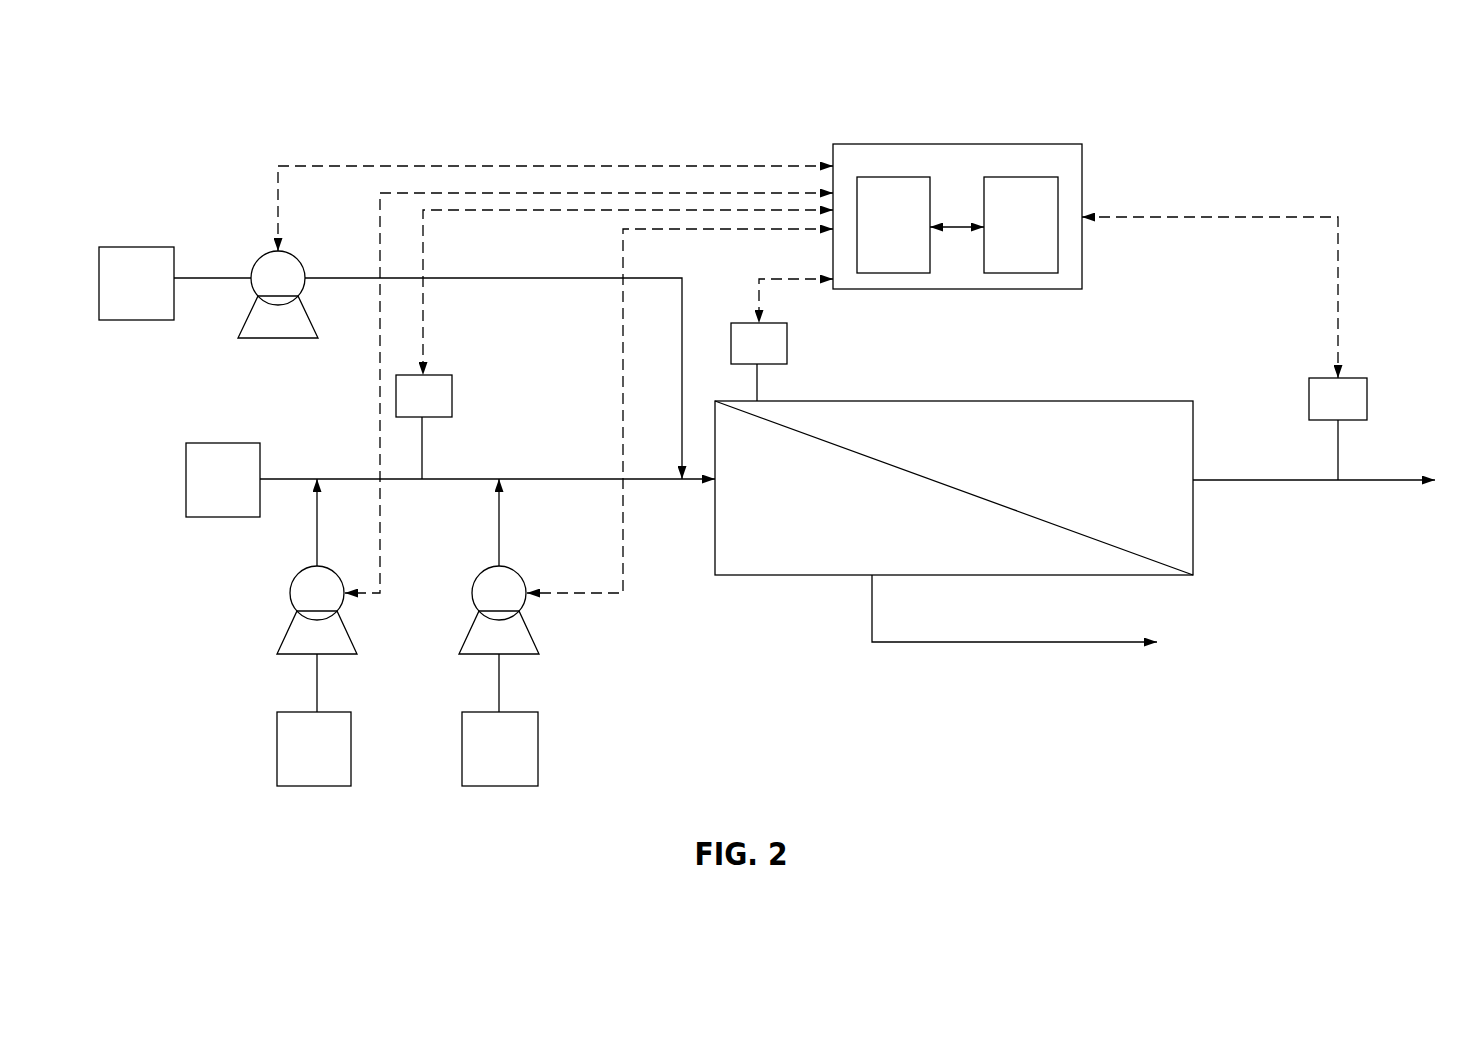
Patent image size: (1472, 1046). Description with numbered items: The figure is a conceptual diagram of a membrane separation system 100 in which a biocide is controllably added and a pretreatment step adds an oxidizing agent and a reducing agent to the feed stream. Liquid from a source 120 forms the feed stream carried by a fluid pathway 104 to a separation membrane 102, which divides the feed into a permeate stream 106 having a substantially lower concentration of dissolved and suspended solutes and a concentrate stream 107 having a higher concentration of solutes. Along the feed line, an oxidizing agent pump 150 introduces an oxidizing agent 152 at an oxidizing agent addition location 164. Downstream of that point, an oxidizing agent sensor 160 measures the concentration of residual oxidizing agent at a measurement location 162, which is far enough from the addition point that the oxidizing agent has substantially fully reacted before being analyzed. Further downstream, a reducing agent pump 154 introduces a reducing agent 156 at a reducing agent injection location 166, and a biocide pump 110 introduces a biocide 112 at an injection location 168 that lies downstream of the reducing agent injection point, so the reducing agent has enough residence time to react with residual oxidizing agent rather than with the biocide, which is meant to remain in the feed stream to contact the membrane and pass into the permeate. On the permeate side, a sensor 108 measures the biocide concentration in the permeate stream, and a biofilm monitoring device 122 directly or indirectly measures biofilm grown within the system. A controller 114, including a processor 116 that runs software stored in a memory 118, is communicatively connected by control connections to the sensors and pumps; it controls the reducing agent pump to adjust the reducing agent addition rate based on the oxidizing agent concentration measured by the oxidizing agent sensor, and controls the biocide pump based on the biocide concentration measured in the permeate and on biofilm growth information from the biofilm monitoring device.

The membrane separation system 100 is at (1430, 244).
The separation membrane 102 is at (1150, 401).
The fluid pathway 104 is at (552, 479).
The permeate stream 106 is at (1286, 480).
The concentrate stream 107 is at (872, 623).
The sensor 108 is at (1320, 411).
The biocide pump 110 is at (262, 289).
The biocide 112 is at (117, 296).
The controller 114 is at (1085, 212).
The processor 116 is at (873, 239).
The memory 118 is at (1001, 239).
The source 120 is at (203, 492).
The biofilm monitoring device 122 is at (741, 356).
The oxidizing agent pump 150 is at (301, 604).
The oxidizing agent 152 is at (294, 761).
The reducing agent pump 154 is at (483, 604).
The reducing agent 156 is at (480, 761).
The oxidizing agent sensor 160 is at (406, 408).
The measurement location 162 is at (417, 480).
The oxidizing agent addition location 164 is at (318, 479).
The reducing agent injection location 166 is at (500, 479).
The injection location 168 is at (682, 482).